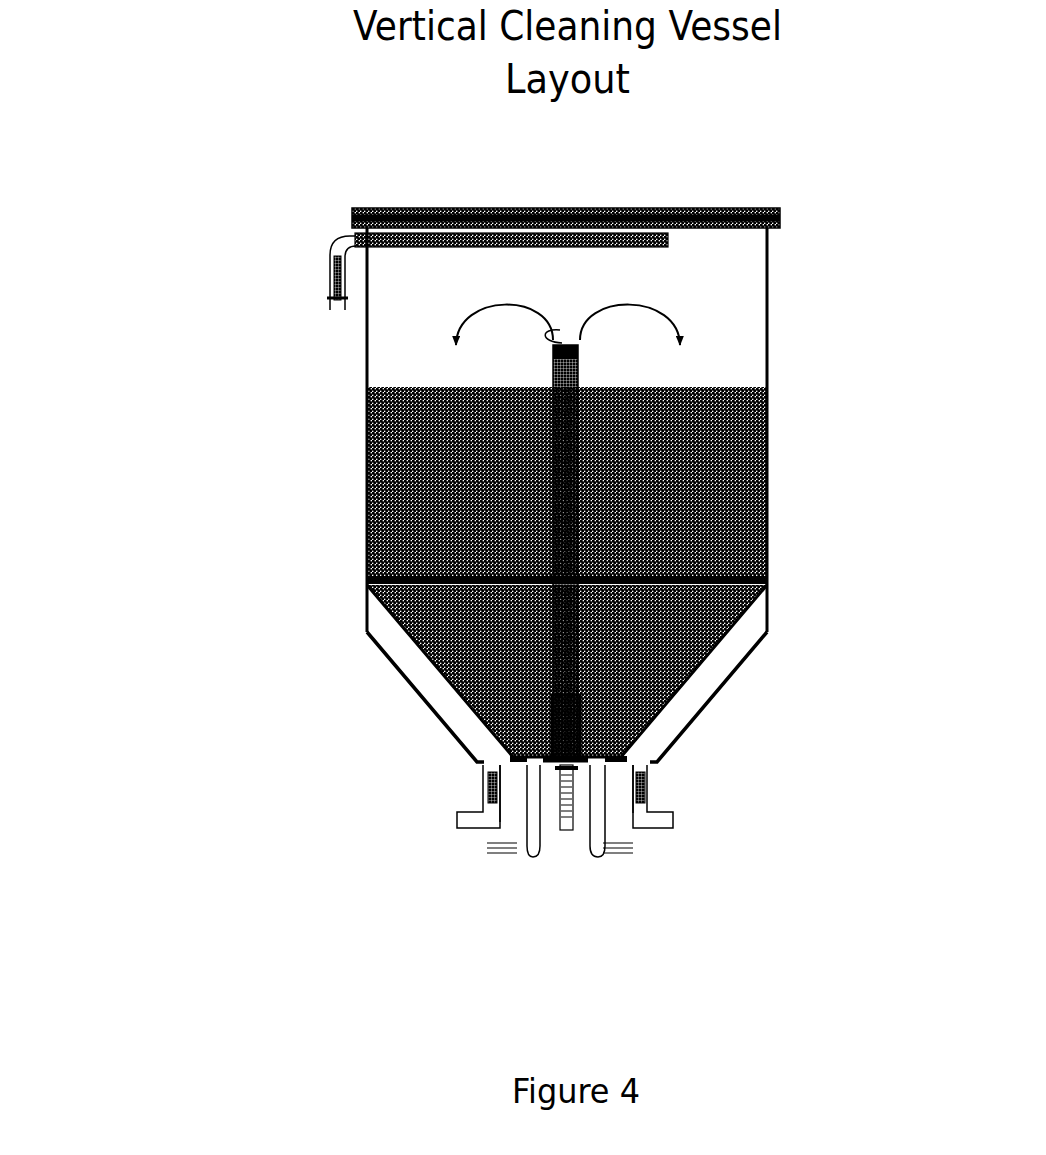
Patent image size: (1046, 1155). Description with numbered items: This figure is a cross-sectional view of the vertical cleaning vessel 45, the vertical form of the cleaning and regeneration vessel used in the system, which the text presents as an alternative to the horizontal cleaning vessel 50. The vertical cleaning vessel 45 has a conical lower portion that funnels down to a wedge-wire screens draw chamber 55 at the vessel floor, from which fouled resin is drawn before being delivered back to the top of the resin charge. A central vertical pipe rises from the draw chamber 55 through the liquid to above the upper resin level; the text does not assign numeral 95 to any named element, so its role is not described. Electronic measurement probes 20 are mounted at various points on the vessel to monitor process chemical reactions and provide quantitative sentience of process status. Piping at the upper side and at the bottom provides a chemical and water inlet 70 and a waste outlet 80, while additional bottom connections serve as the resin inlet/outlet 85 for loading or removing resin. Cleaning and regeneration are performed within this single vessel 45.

The electronic measurement probes 20 is at (335, 298).
The vertical cleaning vessel 45 is at (768, 311).
The horizontal cleaning vessel 50 is at (467, 697).
The wedge-wire screens draw chamber 55 is at (572, 722).
The chemical & water inlet 70 is at (474, 538).
The waste outlet 80 is at (333, 247).
The resin inlet/outlet 85 is at (533, 820).
The central riser pipe 95 is at (568, 404).